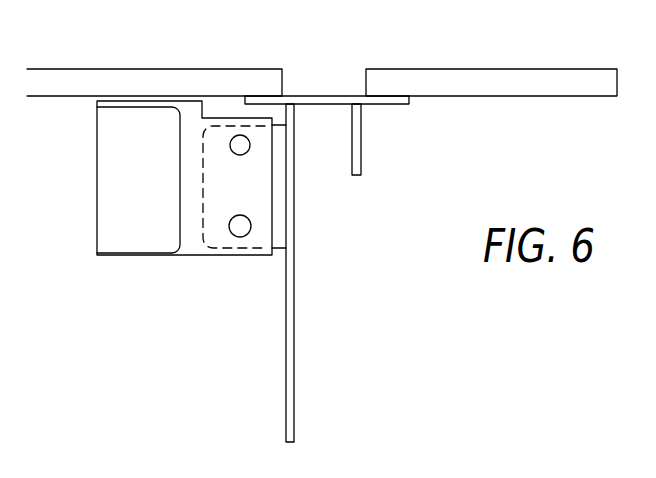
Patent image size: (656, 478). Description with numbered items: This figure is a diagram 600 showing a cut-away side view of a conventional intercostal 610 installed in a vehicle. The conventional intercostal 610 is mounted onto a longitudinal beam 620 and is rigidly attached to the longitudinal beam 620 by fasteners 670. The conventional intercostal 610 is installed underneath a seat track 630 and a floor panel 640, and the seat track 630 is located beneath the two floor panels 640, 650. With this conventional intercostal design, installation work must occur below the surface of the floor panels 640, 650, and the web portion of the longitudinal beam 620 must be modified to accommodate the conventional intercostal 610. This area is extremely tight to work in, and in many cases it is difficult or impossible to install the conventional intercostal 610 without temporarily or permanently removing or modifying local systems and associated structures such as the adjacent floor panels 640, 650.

The diagram 600 is at (432, 337).
The conventional intercostal 610 is at (123, 255).
The longitudinal beam 620 is at (294, 355).
The seat track 630 is at (361, 135).
The floor panel 640 is at (225, 80).
The floor panel 650 is at (475, 85).
The fasteners 670 is at (247, 272).